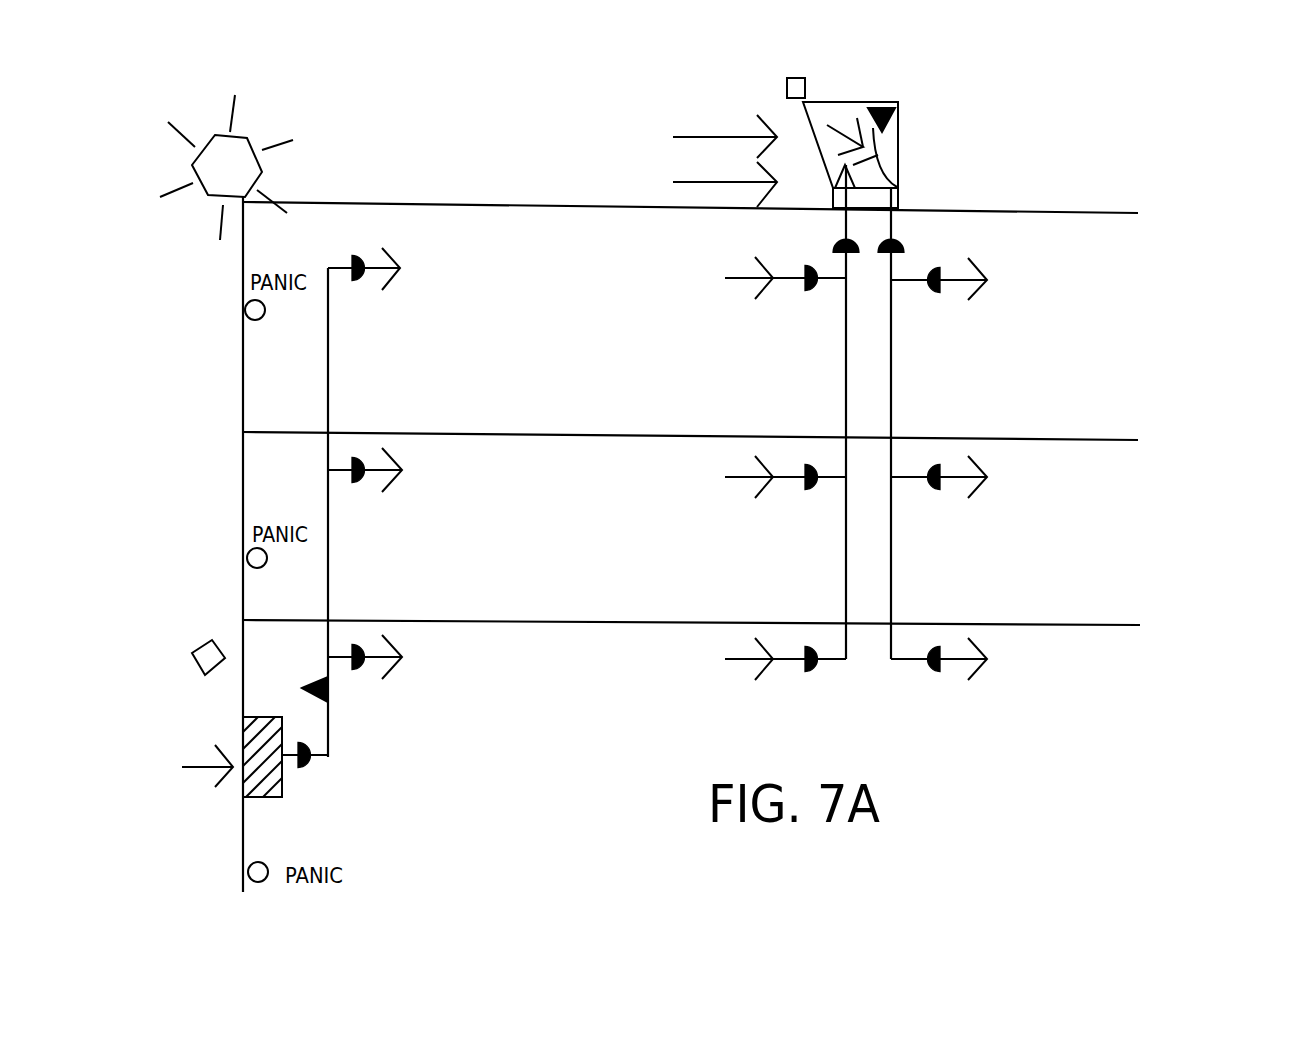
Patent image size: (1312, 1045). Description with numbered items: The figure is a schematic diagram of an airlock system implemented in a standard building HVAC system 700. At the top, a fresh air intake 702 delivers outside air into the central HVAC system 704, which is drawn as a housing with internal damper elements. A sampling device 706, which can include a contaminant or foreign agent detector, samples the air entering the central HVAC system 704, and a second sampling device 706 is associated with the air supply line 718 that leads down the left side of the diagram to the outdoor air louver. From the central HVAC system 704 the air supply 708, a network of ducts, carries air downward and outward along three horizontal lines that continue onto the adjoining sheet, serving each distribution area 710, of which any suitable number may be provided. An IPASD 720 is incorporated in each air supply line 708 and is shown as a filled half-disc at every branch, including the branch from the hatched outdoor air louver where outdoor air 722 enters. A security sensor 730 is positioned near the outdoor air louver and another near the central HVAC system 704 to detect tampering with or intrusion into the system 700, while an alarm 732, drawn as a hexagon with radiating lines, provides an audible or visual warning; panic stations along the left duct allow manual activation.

The building HVAC system 700 is at (1065, 213).
The fresh air intake 702 is at (660, 161).
The central HVAC system 704 is at (898, 170).
The sampling device 706 is at (890, 108).
The air supply 708 is at (892, 383).
The distribution area 710 is at (390, 262).
The air supply line 718 is at (330, 567).
The IPASD 720 is at (355, 283).
The outdoor air 722 is at (301, 779).
The security sensor 730 is at (805, 78).
The alarm 732 is at (245, 138).